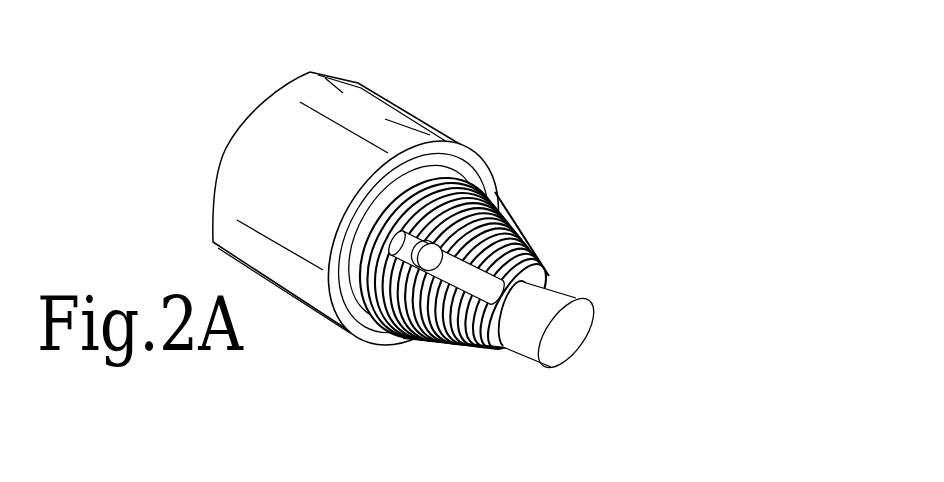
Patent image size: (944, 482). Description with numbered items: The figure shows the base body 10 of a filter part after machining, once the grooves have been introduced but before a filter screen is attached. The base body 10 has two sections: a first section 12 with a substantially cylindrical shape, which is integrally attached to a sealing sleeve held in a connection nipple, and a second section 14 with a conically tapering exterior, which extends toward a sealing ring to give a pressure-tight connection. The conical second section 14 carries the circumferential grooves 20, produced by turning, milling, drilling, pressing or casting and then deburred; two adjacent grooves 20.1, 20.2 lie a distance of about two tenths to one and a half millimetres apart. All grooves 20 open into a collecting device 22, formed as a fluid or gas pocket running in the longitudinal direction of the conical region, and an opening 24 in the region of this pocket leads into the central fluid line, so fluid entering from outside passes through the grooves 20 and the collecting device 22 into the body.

The base body 10 is at (468, 245).
The first section 12 is at (352, 130).
The second section 14 is at (504, 307).
The grooves 20 is at (504, 313).
The circumferential groove 20.1 is at (433, 347).
The circumferential groove 20.2 is at (441, 340).
The collecting device 22 is at (550, 274).
The opening 24 is at (428, 262).